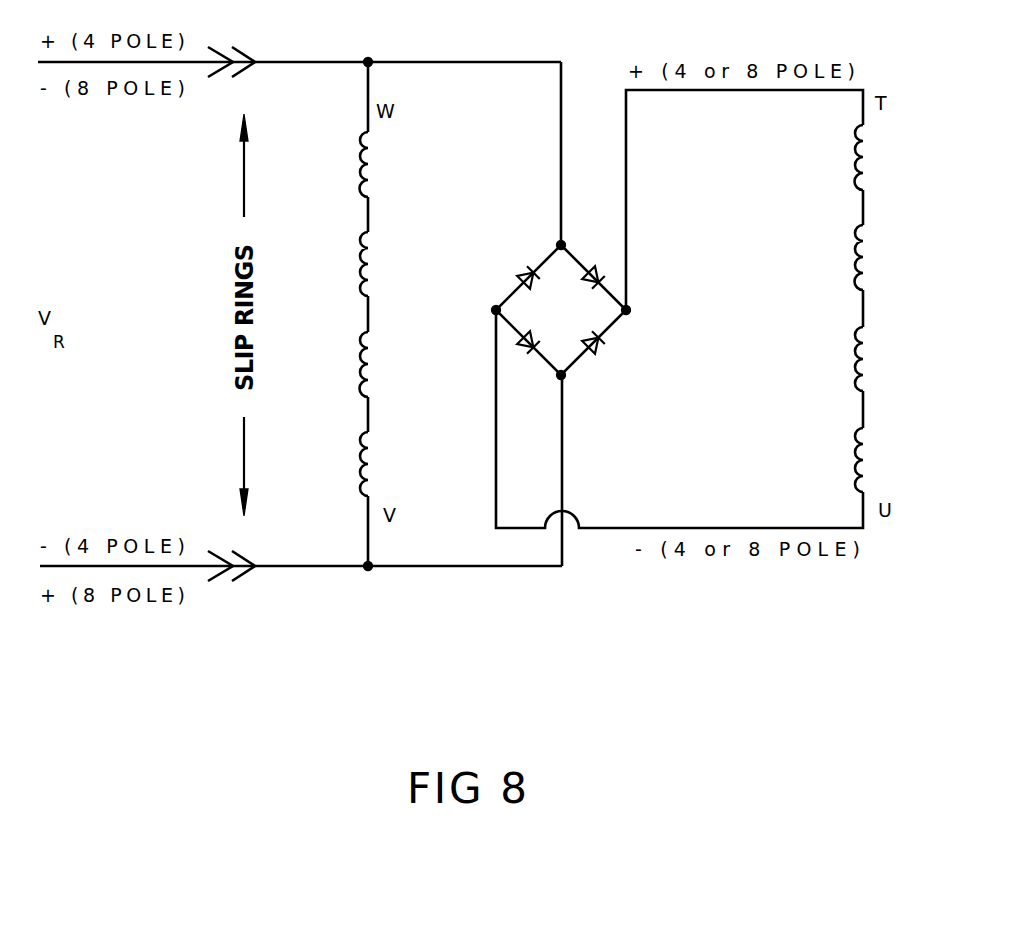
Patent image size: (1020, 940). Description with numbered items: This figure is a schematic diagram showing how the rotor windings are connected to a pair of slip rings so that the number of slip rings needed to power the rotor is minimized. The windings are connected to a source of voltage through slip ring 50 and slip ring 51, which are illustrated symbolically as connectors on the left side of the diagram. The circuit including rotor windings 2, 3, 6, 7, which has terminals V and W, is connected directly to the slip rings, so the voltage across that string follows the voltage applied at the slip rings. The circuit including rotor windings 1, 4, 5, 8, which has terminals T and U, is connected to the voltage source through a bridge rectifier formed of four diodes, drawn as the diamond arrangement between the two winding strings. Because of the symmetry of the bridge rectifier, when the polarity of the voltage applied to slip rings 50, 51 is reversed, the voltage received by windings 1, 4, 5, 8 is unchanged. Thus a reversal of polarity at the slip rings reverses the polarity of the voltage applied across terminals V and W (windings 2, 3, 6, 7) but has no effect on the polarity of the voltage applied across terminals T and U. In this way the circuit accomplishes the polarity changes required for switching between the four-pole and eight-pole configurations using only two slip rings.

The slip ring 50 is at (243, 60).
The slip ring 51 is at (250, 571).
The rotor winding 1 is at (868, 157).
The rotor winding 2 is at (373, 164).
The rotor winding 3 is at (372, 264).
The rotor winding 4 is at (868, 257).
The rotor winding 5 is at (868, 359).
The rotor winding 6 is at (373, 364).
The rotor winding 7 is at (372, 464).
The rotor winding 8 is at (868, 460).